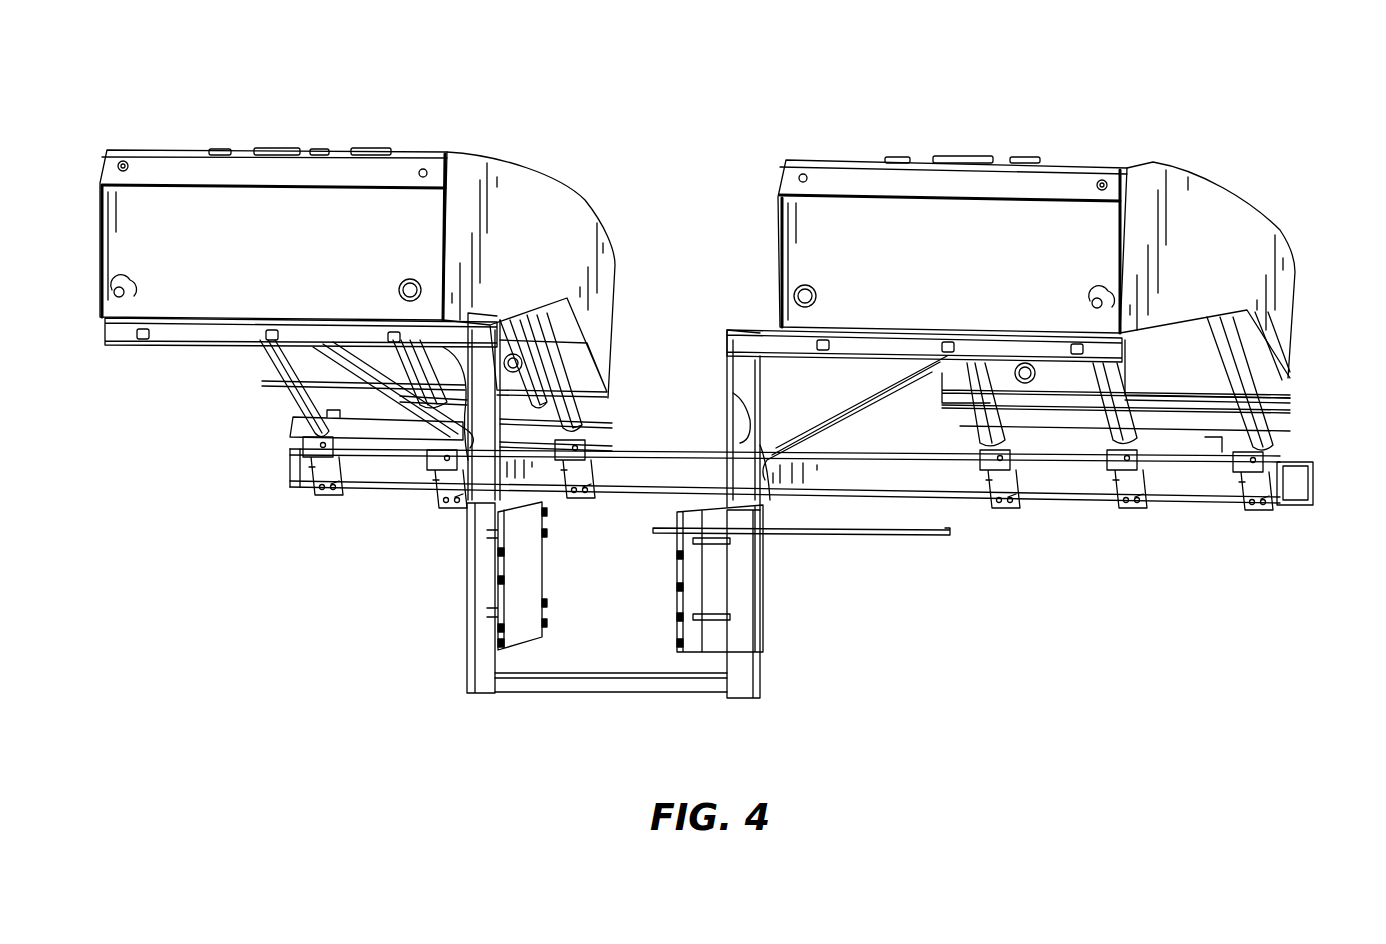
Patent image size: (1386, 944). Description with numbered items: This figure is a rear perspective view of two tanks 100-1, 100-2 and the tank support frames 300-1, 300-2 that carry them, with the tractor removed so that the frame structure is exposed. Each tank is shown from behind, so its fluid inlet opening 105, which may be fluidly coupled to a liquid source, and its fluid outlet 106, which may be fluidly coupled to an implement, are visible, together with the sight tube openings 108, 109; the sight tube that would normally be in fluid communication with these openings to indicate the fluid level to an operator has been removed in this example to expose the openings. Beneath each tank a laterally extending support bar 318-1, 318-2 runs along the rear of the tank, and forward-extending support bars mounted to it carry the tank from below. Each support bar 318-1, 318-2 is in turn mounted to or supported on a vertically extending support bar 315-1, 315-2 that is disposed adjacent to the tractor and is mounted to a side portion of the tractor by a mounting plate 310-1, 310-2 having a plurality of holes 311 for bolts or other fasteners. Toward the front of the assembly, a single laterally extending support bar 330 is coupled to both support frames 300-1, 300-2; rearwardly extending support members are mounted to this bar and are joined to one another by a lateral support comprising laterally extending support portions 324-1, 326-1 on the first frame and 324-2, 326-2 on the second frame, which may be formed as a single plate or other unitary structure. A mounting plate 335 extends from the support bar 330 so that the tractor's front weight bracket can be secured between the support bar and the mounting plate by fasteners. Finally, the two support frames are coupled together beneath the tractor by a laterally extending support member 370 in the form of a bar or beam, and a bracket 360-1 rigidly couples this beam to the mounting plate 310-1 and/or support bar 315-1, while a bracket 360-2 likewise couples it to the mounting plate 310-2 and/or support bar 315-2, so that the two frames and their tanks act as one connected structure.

The tank 100-1 is at (183, 148).
The tank 100-2 is at (1068, 165).
The fluid inlet opening 105 is at (403, 286).
The fluid outlet 106 is at (533, 398).
The sight tube opening 108 is at (119, 164).
The sight tube opening 109 is at (114, 291).
The support frame 300-1 is at (249, 456).
The support frame 300-2 is at (1313, 505).
The mounting plate 310-1 is at (527, 643).
The mounting plate 310-2 is at (673, 600).
The holes 311 is at (500, 581).
The support bar 315-1 is at (468, 500).
The support bar 315-2 is at (733, 412).
The support bar 318-1 is at (100, 334).
The support bar 318-2 is at (1102, 350).
The support portion 324-1 is at (538, 435).
The support portion 324-2 is at (1050, 440).
The support portion 326-1 is at (370, 428).
The support portion 326-2 is at (1212, 438).
The support bar 330 is at (605, 448).
The mounting plate 335 is at (923, 540).
The bracket 360-1 is at (476, 693).
The bracket 360-2 is at (742, 688).
The support member 370 is at (612, 686).